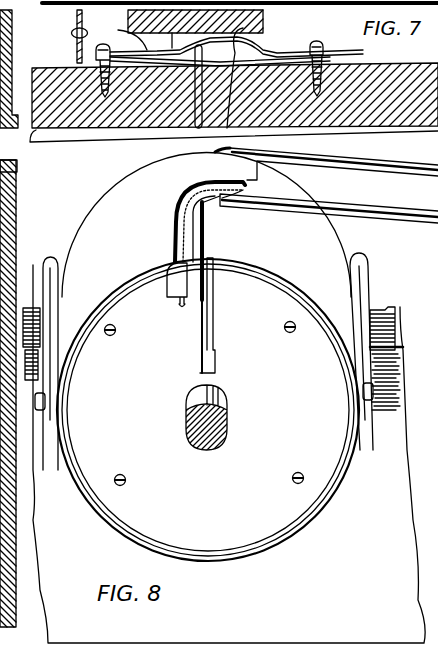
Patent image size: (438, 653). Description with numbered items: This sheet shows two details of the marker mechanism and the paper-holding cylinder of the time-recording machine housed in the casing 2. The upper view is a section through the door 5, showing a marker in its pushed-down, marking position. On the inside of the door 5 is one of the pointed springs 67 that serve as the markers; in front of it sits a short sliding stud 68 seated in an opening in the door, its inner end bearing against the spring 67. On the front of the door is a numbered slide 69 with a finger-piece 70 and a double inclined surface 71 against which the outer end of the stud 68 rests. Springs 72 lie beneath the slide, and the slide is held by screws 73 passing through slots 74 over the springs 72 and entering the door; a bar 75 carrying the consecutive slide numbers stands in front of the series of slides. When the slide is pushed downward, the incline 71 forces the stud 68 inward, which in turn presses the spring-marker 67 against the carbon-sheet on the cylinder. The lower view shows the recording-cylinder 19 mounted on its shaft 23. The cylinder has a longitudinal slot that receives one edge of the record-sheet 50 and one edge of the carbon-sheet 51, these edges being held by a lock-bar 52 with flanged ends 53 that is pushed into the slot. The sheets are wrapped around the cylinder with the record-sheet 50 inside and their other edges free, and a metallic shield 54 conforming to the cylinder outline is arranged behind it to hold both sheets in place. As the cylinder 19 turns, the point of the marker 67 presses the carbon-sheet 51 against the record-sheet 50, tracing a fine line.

In FIG. 8, the casing 2 is at (13, 207).
In FIG. 7, the door 5 is at (399, 64).
In FIG. 8, the recording-cylinder 19 is at (208, 410).
In FIG. 8, the shaft 23 is at (186, 402).
In FIG. 8, the record-sheet 50 is at (214, 340).
In FIG. 8, the carbon-sheet 51 is at (377, 235).
In FIG. 8, the lock-bar 52 is at (203, 240).
In FIG. 8, the flanged ends 53 is at (177, 280).
In FIG. 8, the metallic shield 54 is at (240, 563).
In FIG. 7, the springs 67 is at (58, 4).
In FIG. 8, the springs 67 is at (378, 206).
In FIG. 7, the sliding stud 68 is at (173, 143).
In FIG. 7, the numbered slides 69 is at (181, 69).
In FIG. 7, the finger-pieces 70 is at (73, 32).
In FIG. 7, the double inclined surface 71 is at (277, 40).
In FIG. 7, the springs 72 is at (300, 43).
In FIG. 7, the screws 73 is at (97, 70).
In FIG. 7, the slots 74 is at (127, 52).
In FIG. 8, the bar 75 is at (207, 150).